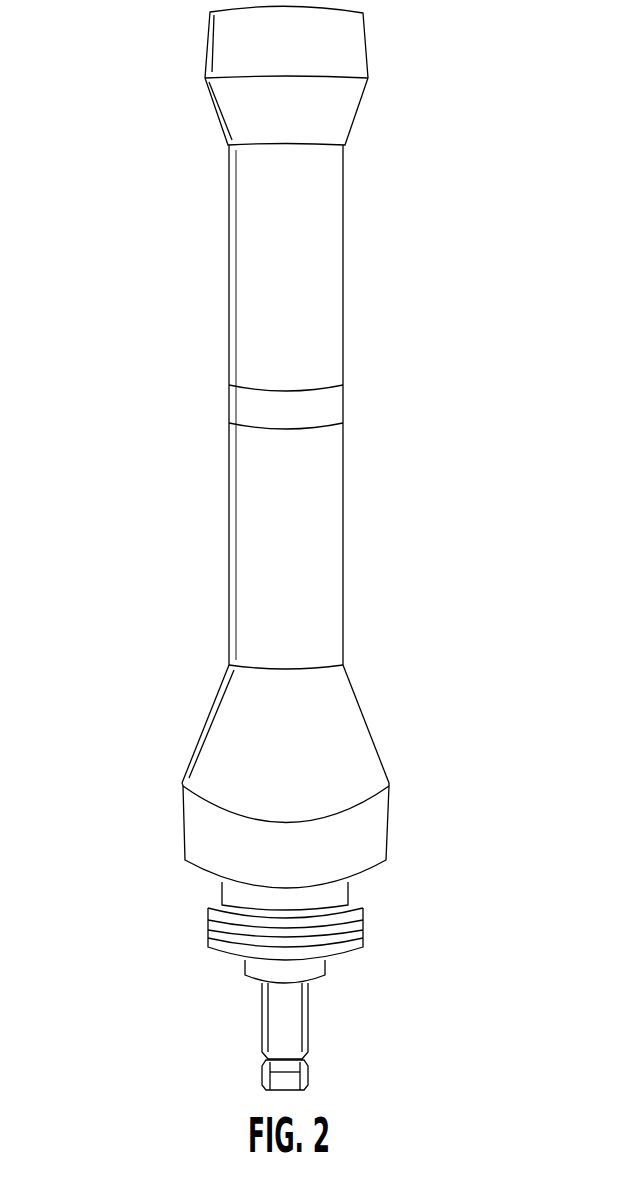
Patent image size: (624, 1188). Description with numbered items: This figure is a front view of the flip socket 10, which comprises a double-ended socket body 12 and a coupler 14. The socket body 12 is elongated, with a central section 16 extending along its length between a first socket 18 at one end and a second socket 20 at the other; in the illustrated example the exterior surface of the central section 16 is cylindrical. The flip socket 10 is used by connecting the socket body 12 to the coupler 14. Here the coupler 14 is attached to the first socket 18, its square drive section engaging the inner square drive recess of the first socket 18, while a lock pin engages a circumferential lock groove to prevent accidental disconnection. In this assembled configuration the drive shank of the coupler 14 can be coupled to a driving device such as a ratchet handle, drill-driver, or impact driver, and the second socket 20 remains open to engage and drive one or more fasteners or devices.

The flip socket 10 is at (118, 458).
The socket body 12 is at (410, 302).
The coupler 14 is at (350, 985).
The central section 16 is at (337, 503).
The first socket 18 is at (350, 713).
The second socket 20 is at (350, 47).